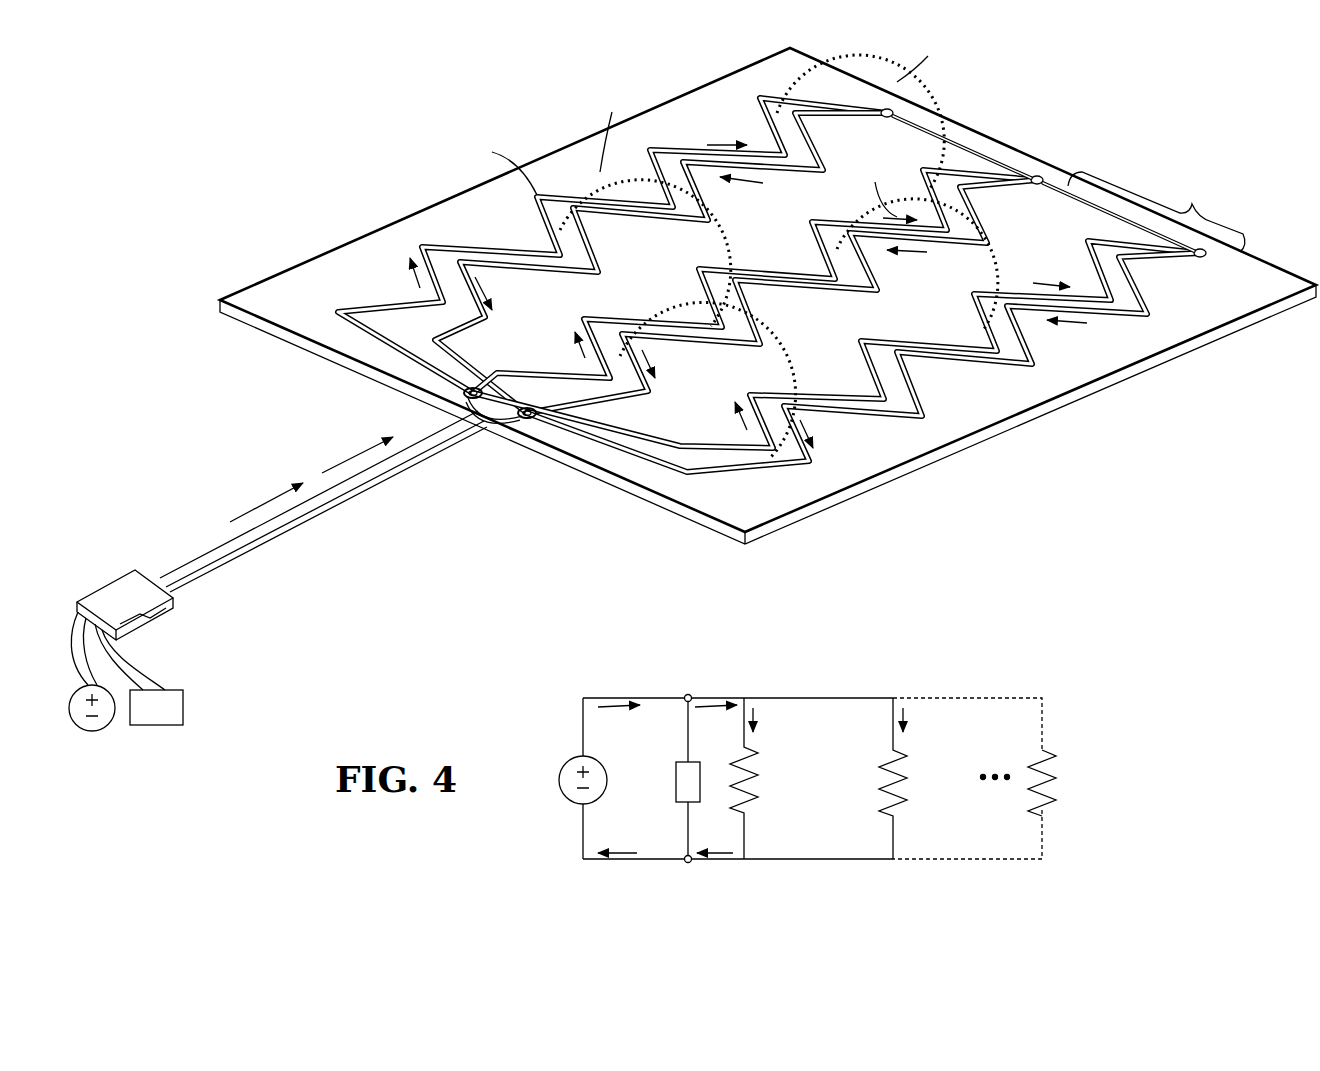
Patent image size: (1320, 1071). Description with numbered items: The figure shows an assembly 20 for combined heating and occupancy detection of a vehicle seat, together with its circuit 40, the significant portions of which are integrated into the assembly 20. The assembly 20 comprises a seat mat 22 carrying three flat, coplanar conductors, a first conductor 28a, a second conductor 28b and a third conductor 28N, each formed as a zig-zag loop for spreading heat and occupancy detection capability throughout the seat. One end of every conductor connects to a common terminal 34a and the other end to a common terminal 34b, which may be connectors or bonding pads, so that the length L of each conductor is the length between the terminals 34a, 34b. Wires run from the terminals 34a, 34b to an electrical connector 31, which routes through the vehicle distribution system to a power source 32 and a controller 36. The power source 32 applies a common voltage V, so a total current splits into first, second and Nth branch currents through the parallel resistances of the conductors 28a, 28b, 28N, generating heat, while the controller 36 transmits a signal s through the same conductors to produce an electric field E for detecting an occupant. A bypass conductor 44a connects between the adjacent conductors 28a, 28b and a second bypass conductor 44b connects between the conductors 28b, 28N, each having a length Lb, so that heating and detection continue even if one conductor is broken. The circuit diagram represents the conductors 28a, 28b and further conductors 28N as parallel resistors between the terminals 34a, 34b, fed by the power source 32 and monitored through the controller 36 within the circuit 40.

In FIG. 3, the assembly 20 is at (692, 410).
In FIG. 3, the seat mat 22 is at (1282, 268).
In FIG. 3, the first conductor 28a is at (841, 99).
In FIG. 4, the first conductor 28a is at (744, 833).
In FIG. 3, the second conductor 28b is at (1000, 175).
In FIG. 4, the second conductor 28b is at (895, 830).
In FIG. 3, the third conductor 28N is at (1210, 247).
In FIG. 3, the electrical connector 31 is at (178, 594).
In FIG. 3, the power source 32 is at (92, 731).
In FIG. 4, the power source 32 is at (558, 792).
In FIG. 3, the terminal 34a is at (463, 394).
In FIG. 4, the terminal 34a is at (688, 695).
In FIG. 3, the terminal 34b is at (527, 420).
In FIG. 4, the terminal 34b is at (688, 862).
In FIG. 3, the controller 36 is at (158, 725).
In FIG. 4, the controller 36 is at (676, 773).
In FIG. 3, the circuit 40 is at (809, 293).
In FIG. 4, the circuit 40 is at (791, 758).
In FIG. 3, the bypass conductor 44a is at (945, 137).
In FIG. 3, the bypass conductor 44b is at (1123, 215).